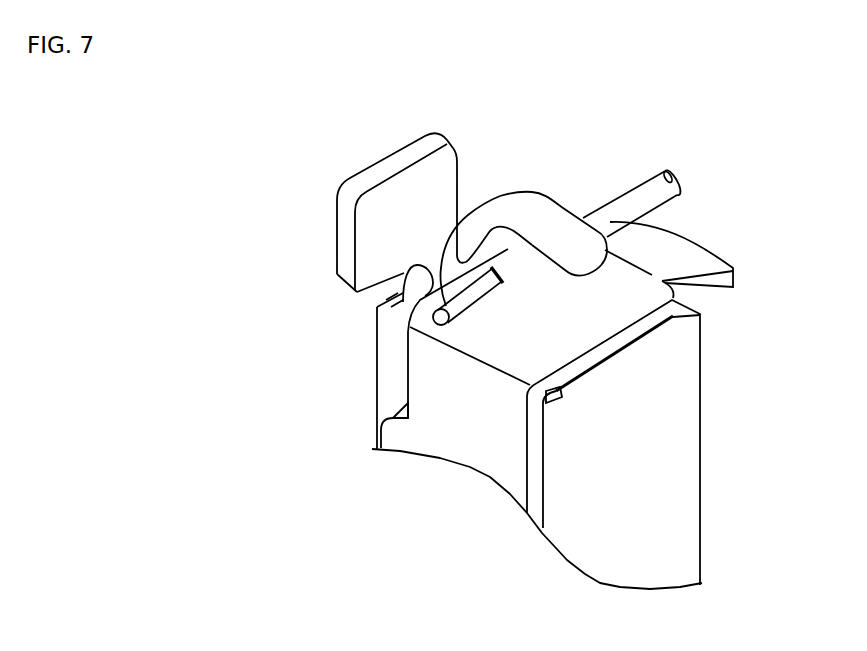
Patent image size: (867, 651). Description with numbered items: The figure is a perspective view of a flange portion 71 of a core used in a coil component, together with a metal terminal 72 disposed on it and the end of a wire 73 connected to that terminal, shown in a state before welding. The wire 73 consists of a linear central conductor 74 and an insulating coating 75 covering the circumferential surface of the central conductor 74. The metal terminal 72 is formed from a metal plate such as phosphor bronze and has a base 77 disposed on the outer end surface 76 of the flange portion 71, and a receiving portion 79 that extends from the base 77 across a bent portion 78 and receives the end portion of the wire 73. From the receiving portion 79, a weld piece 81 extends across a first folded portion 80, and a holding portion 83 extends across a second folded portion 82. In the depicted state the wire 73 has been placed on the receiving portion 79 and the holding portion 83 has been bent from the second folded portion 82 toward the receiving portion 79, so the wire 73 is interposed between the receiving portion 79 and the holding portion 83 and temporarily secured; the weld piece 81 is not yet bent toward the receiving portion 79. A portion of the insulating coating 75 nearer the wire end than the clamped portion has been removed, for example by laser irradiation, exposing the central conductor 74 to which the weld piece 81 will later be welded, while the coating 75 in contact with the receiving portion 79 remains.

The flange portion 71 is at (702, 520).
The metal terminal 72 is at (478, 451).
The wire 73 is at (618, 197).
The central conductor 74 is at (432, 281).
The insulating coating 75 is at (498, 303).
The outer end surface 76 is at (384, 364).
The base 77 is at (443, 412).
The bent portion 78 is at (509, 378).
The receiving portion 79 is at (652, 296).
The first folded portion 80 is at (418, 259).
The weld piece 81 is at (386, 211).
The second folded portion 82 is at (515, 187).
The holding portion 83 is at (547, 213).